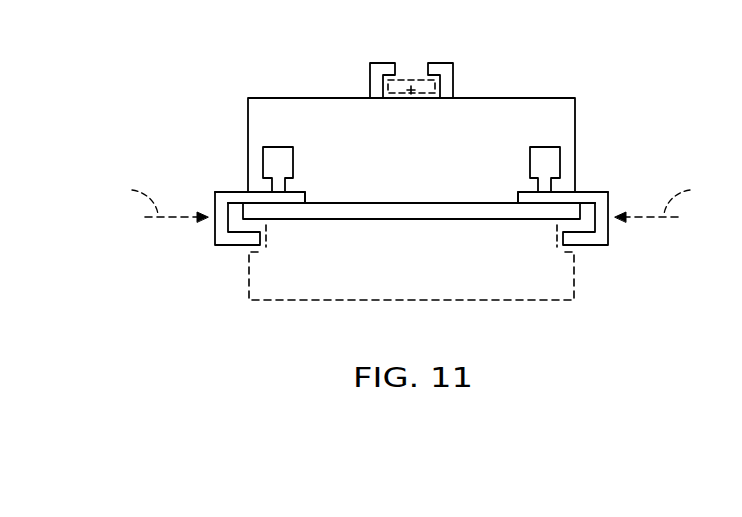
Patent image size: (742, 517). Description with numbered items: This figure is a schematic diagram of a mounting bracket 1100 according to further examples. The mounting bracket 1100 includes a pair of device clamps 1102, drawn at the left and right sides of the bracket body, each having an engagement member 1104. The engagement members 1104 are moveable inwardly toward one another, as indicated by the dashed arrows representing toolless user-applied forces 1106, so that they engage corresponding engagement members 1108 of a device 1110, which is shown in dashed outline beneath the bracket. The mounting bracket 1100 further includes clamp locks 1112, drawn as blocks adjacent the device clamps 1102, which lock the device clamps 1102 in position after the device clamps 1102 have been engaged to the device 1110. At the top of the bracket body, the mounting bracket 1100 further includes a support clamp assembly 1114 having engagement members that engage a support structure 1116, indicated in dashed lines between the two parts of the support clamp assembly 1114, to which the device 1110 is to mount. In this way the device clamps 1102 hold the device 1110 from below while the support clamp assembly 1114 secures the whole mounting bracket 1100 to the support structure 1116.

The mounting bracket 1100 is at (577, 120).
The device clamps 1102 is at (260, 188).
The engagement members 1104 is at (238, 245).
The toolless user-applied forces 1106 is at (410, 198).
The engagement members of the device 1108 is at (268, 238).
The device 1110 is at (412, 280).
The clamp locks 1112 is at (293, 160).
The support clamp assembly 1114 is at (370, 73).
The support structure 1116 is at (408, 106).